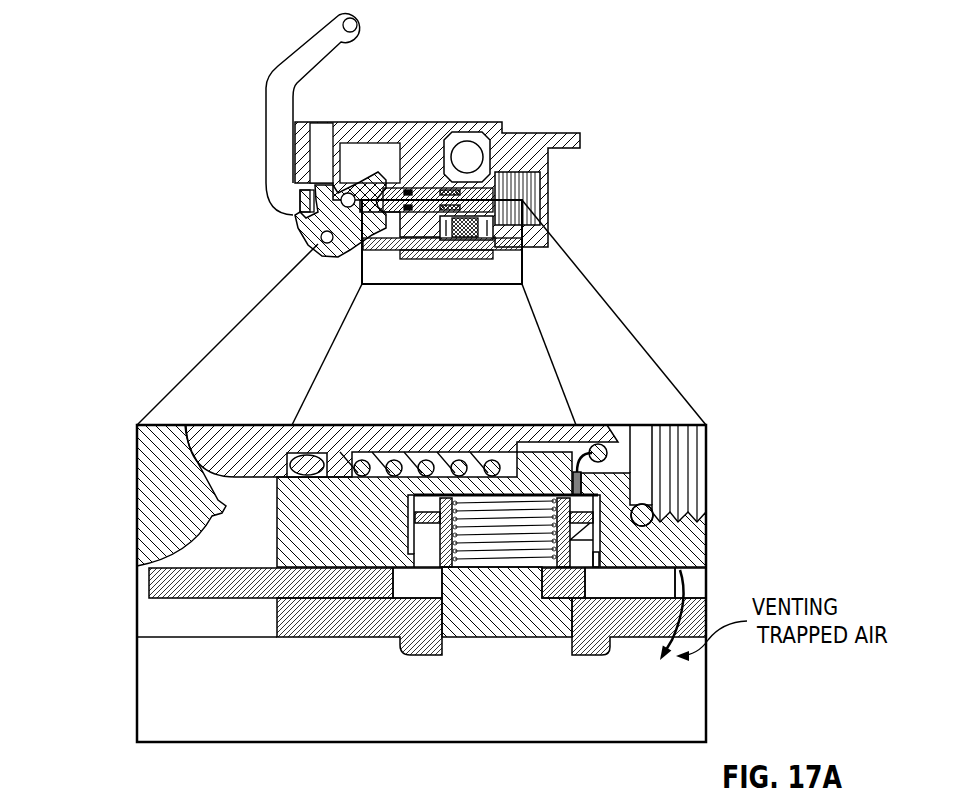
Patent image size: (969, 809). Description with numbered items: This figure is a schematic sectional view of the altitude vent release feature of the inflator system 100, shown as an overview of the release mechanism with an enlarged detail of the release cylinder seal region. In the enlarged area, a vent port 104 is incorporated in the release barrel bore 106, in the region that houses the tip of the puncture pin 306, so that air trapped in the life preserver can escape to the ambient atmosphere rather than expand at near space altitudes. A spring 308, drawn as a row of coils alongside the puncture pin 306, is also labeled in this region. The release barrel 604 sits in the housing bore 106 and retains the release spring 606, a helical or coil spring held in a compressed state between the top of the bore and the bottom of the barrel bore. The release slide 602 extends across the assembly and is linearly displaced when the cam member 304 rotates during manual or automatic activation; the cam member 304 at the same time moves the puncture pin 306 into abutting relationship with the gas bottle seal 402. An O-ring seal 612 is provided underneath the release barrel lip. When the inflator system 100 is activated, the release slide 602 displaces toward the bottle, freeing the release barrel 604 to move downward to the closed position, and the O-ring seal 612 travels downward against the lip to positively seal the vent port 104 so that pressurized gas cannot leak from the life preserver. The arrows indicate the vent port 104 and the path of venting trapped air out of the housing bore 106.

The inflator system 100 is at (450, 104).
The cam member 304 is at (147, 495).
The puncture pin 306 is at (278, 432).
The release spring 308 is at (498, 468).
The O-ring seal 612 is at (427, 512).
The vent port 104 is at (597, 483).
The gas bottle seal 402 is at (653, 522).
The release slide 602 is at (205, 587).
The release barrel 604 is at (490, 622).
The release spring 606 is at (503, 557).
The housing bore 106 is at (568, 647).